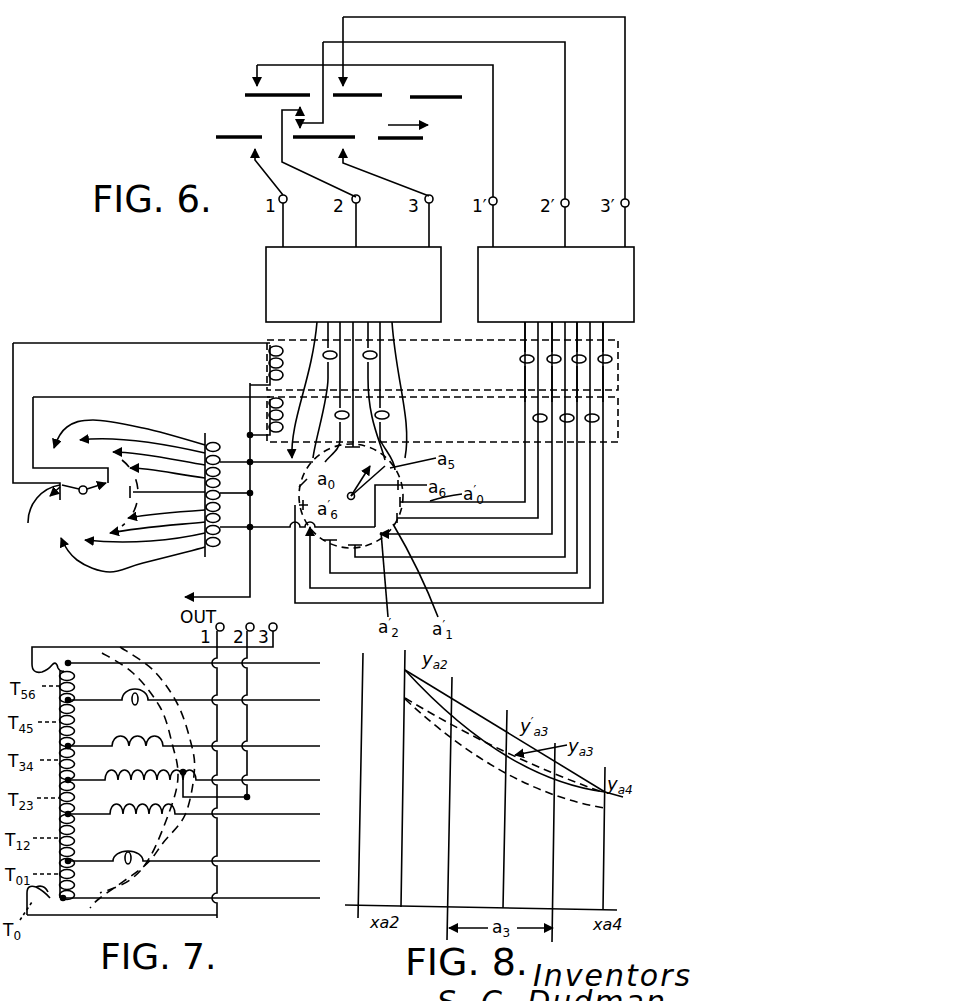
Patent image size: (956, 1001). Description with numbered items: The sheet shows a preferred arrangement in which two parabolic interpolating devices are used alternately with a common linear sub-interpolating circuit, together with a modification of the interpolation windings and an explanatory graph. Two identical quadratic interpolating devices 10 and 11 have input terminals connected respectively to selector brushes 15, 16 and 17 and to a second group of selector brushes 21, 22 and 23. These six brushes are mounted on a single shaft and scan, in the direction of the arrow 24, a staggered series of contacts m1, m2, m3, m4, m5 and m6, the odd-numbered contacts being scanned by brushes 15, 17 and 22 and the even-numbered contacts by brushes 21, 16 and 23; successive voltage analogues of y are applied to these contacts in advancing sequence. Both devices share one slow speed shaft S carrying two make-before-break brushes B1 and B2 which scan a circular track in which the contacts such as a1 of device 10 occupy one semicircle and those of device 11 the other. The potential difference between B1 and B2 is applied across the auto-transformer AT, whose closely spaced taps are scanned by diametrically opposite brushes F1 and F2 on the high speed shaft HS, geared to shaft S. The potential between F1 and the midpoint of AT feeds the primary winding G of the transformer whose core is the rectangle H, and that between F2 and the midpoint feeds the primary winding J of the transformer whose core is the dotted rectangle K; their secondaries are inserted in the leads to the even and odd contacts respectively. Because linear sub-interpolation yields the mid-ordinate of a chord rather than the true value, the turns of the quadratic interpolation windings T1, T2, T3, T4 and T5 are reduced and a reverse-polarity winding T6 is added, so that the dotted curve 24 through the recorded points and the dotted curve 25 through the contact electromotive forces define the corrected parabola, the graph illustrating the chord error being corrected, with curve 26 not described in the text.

In FIG. 6, the quadratic interpolating device 10 is at (353, 284).
In FIG. 6, the quadratic interpolating device 11 is at (556, 284).
In FIG. 6, the selector brush 15 is at (255, 167).
In FIG. 6, the selector brush 16 is at (314, 152).
In FIG. 6, the selector brush 17 is at (356, 171).
In FIG. 6, the selector brush 21 is at (262, 87).
In FIG. 6, the selector brush 22 is at (320, 80).
In FIG. 6, the selector brush 23 is at (345, 84).
In FIG. 6, the arrow / dotted curve 24 is at (423, 128).
In FIG. 7, the arrow / dotted curve 24 is at (150, 878).
In FIG. 7, the dotted curve 25 is at (160, 848).
In FIG. 8, the dashed characteristic curve 26 is at (447, 722).
In FIG. 6, the contact m1 is at (230, 150).
In FIG. 6, the contact m2 is at (258, 90).
In FIG. 6, the contact m3 is at (322, 152).
In FIG. 6, the contact m4 is at (357, 108).
In FIG. 6, the contact m5 is at (399, 153).
In FIG. 6, the contact m6 is at (445, 110).
In FIG. 6, the primary winding J is at (267, 363).
In FIG. 6, the transformer core K is at (495, 387).
In FIG. 6, the transformer core H is at (480, 399).
In FIG. 6, the auto-transformer AT is at (158, 416).
In FIG. 6, the primary winding G is at (230, 490).
In FIG. 6, the slow speed shaft S is at (351, 496).
In FIG. 6, the brush F1 is at (146, 497).
In FIG. 6, the brush F2 is at (68, 506).
In FIG. 6, the high speed shaft HS is at (80, 498).
In FIG. 6, the brush B1 is at (351, 479).
In FIG. 6, the brush B2 is at (382, 476).
In FIG. 6, the contact a1 is at (300, 469).
In FIG. 7, the quadratic interpolation winding T1 is at (125, 852).
In FIG. 7, the quadratic interpolation winding T2 is at (133, 808).
In FIG. 7, the quadratic interpolation winding T3 is at (125, 774).
In FIG. 7, the quadratic interpolation winding T4 is at (135, 740).
In FIG. 7, the quadratic interpolation winding T5 is at (125, 693).
In FIG. 7, the negative winding T6 is at (44, 660).